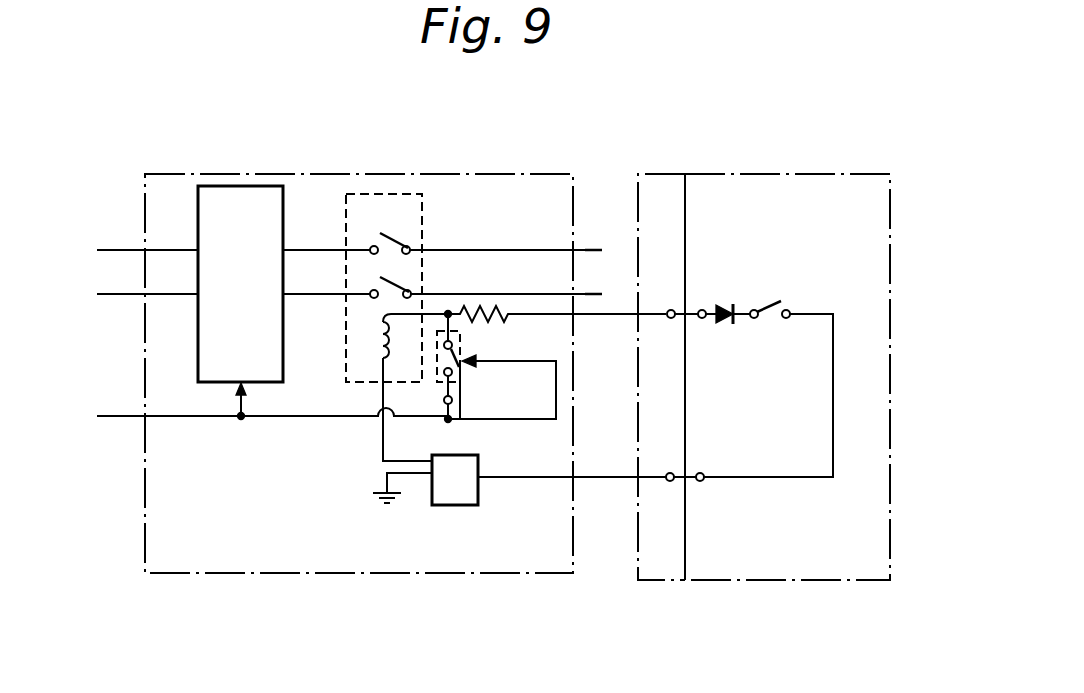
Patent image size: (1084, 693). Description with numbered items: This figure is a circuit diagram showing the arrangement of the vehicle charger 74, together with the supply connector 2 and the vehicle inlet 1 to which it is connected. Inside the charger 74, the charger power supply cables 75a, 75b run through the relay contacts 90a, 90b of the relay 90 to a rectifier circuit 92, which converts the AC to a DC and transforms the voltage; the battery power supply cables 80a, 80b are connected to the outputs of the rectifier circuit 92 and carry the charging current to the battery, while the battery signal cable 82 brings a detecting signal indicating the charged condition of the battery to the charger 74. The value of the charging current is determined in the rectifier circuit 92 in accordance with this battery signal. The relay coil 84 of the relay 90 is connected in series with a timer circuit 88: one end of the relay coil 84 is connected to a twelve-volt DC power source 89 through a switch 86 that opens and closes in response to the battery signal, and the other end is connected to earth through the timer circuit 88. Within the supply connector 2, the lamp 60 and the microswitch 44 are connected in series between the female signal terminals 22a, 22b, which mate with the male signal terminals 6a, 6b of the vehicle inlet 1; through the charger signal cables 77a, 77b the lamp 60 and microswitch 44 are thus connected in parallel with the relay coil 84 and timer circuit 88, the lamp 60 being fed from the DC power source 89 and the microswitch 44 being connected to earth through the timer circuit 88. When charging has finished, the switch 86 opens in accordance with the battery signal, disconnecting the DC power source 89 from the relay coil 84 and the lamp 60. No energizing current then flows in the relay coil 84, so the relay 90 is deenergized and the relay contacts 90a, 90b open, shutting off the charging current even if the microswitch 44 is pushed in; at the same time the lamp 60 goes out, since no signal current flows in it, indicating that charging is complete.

The charger 74 is at (289, 576).
The vehicle inlet 1 is at (655, 583).
The supply connector 2 is at (775, 583).
The rectifier circuit 92 is at (198, 190).
The battery power supply cable 80a is at (107, 248).
The battery power supply cable 80b is at (107, 297).
The charger power supply cable 75a is at (578, 250).
The charger power supply cable 75b is at (597, 297).
The battery signal cable 82 is at (107, 420).
The relay 90 is at (345, 195).
The relay contact 90a is at (396, 236).
The relay contact 90b is at (404, 281).
The relay coil 84 is at (380, 347).
The normal open switch 86 is at (470, 338).
The DC power source 89 is at (450, 421).
The timer circuit 88 is at (458, 507).
The charger signal cable 77a is at (606, 318).
The charger signal cable 77b is at (606, 480).
The male signal terminal 6a is at (671, 310).
The male signal terminal 6b is at (670, 481).
The female signal terminal 22a is at (702, 310).
The female signal terminal 22b is at (704, 475).
The lamp 60 is at (748, 300).
The microswitch 44 is at (782, 320).